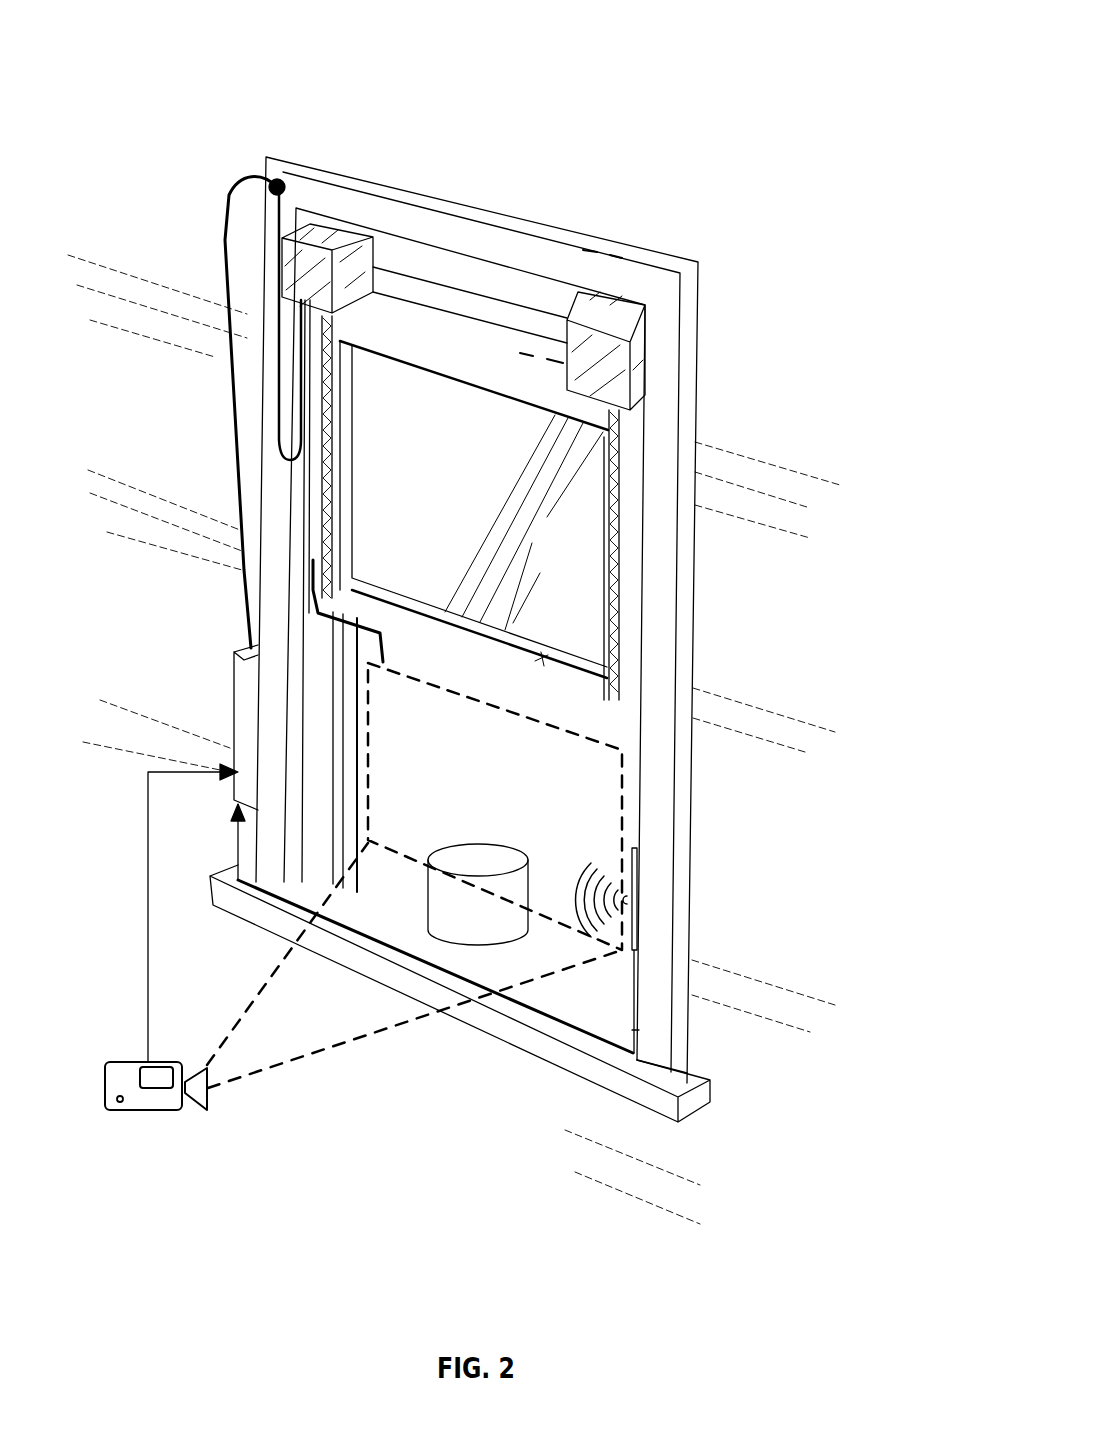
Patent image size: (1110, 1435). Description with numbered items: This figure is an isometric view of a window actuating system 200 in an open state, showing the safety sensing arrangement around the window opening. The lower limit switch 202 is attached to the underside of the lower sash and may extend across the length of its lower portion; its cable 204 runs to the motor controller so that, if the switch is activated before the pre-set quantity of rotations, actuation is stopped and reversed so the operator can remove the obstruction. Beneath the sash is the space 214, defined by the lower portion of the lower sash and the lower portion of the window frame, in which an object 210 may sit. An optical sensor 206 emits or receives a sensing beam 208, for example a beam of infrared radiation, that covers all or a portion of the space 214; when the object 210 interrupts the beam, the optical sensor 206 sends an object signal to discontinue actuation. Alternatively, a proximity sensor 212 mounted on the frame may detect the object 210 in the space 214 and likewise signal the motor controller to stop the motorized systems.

The window actuating system 200 is at (871, 68).
The lower limit switch 202 is at (398, 663).
The cable 204 is at (315, 583).
The optical sensor 206 is at (175, 1154).
The sensing beam 208 is at (268, 1007).
The object 210 is at (498, 917).
The proximity sensor 212 is at (640, 873).
The space 214 is at (608, 795).